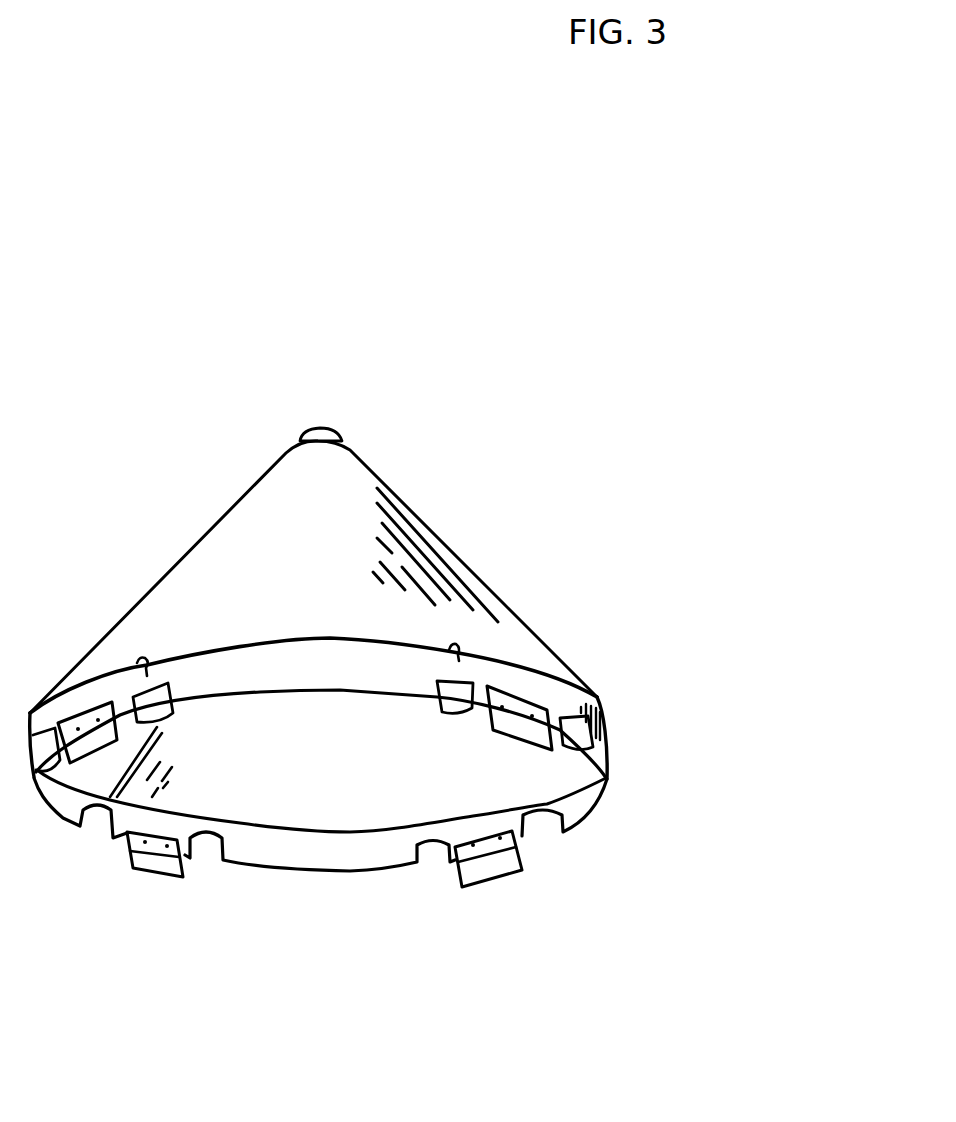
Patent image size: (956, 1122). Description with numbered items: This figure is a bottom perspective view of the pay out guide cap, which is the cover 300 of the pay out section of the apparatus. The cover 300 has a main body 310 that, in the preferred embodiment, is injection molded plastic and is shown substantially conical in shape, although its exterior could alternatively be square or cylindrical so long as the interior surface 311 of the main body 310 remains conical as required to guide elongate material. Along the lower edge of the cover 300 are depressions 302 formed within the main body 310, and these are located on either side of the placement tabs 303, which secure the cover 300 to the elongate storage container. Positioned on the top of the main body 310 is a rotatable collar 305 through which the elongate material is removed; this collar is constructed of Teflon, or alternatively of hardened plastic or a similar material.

The cover 300 is at (184, 360).
The depressions 302 is at (428, 857).
The placement tabs 303 is at (537, 722).
The rotatable collar 305 is at (336, 432).
The main body 310 is at (322, 583).
The interior surface 311 is at (345, 774).